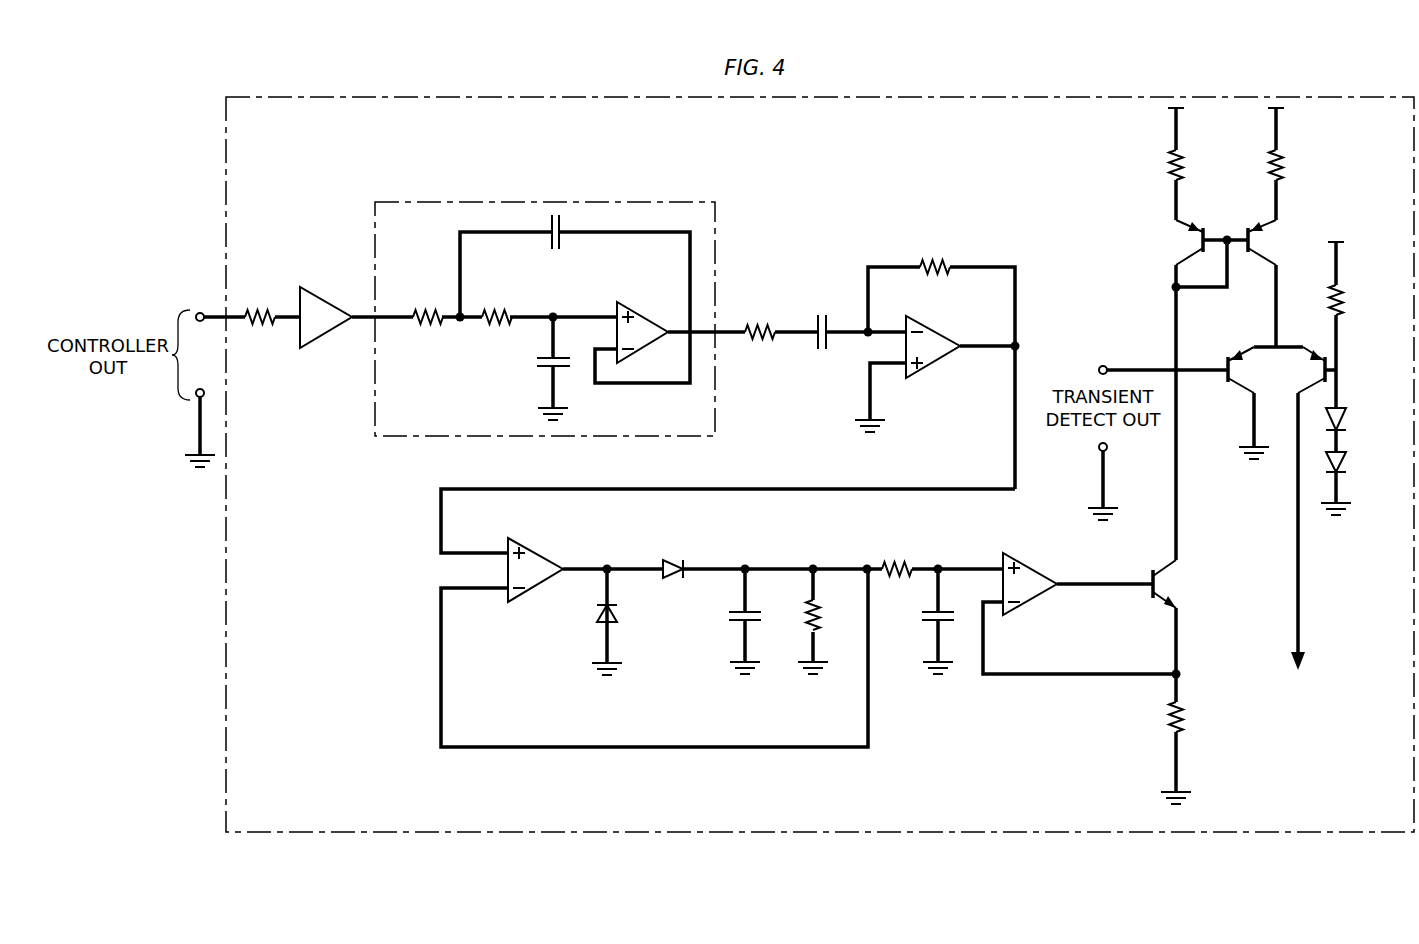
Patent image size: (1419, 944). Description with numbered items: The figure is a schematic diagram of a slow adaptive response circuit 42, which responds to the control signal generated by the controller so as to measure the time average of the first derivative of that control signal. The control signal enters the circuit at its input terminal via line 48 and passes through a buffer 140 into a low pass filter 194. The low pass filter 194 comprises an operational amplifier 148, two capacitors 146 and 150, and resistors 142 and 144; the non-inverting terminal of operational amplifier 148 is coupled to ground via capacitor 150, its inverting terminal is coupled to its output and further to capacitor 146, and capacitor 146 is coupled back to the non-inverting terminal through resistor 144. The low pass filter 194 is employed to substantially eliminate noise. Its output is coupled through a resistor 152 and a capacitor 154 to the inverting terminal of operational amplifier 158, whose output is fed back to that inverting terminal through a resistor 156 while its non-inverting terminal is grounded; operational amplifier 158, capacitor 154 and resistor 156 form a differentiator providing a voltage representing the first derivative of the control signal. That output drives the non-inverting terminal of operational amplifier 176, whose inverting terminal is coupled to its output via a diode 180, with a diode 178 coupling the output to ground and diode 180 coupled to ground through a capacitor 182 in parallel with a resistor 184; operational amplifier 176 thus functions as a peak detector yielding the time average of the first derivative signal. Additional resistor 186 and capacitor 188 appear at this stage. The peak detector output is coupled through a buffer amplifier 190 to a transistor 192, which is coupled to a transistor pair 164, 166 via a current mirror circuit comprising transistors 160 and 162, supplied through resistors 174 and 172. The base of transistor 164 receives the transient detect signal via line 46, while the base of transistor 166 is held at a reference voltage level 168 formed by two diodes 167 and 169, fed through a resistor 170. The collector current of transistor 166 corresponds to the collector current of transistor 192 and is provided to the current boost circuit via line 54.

The slow adaptive response circuit 42 is at (1360, 832).
The line 46 is at (1103, 365).
The line 48 is at (200, 312).
The line 54 is at (1305, 560).
The buffer 140 is at (318, 292).
The resistor 142 is at (428, 310).
The resistor 144 is at (502, 310).
The capacitor 146 is at (562, 240).
The operational amplifier 148 is at (648, 322).
The capacitor 150 is at (540, 372).
The resistor 152 is at (760, 325).
The capacitor 154 is at (832, 322).
The resistor 156 is at (942, 262).
The operational amplifier 158 is at (936, 330).
The transistor 160 is at (1195, 238).
The transistor 162 is at (1262, 240).
The transistor 164 is at (1240, 372).
The transistor 166 is at (1330, 362).
The diode 167 is at (1342, 408).
The reference voltage level 168 is at (1365, 439).
The diode 169 is at (1360, 483).
The resistor 170 is at (1343, 292).
The resistor 172 is at (1282, 160).
The resistor 174 is at (1170, 162).
The operational amplifier 176 is at (540, 590).
The diode 178 is at (617, 610).
The diode 180 is at (670, 558).
The capacitor 182 is at (735, 628).
The resistor 184 is at (822, 620).
The resistor 186 is at (896, 560).
The capacitor 188 is at (930, 628).
The buffer amplifier 190 is at (1030, 562).
The transistor 192 is at (1165, 582).
The low pass filter 194 is at (375, 240).